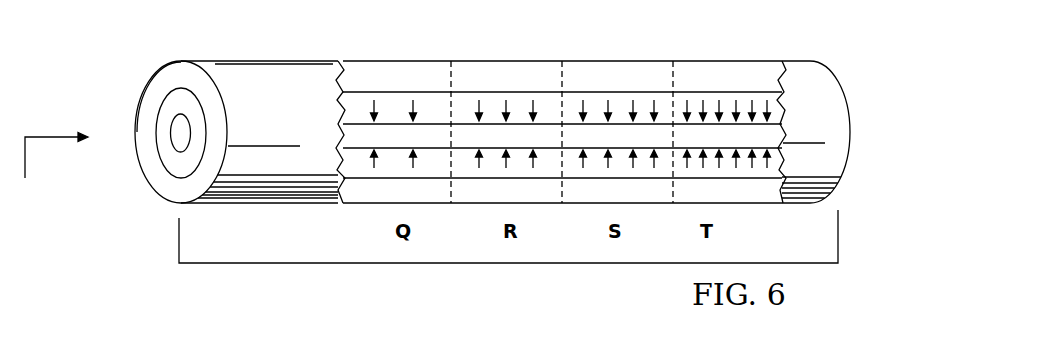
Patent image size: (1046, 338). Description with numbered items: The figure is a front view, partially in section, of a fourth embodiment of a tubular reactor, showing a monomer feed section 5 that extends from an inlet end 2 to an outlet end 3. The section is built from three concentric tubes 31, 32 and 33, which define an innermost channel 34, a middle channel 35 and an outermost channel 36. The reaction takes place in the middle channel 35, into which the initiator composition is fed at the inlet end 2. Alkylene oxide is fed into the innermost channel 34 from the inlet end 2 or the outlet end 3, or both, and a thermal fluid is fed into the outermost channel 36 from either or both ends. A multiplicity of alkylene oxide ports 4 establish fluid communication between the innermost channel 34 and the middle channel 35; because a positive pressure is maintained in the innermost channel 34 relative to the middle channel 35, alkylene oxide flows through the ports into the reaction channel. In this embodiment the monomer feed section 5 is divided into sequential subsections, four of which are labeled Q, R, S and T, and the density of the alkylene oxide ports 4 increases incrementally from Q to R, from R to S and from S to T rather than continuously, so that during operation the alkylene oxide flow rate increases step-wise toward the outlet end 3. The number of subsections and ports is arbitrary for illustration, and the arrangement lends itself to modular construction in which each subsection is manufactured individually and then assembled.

The inlet end 2 is at (55, 169).
The outlet end 3 is at (853, 163).
The alkylene oxide ports 4 is at (480, 112).
The monomer feed section 5 is at (503, 263).
The concentric tube 31 is at (173, 118).
The concentric tube 32 is at (187, 90).
The concentric tube 33 is at (160, 70).
The innermost channel 34 is at (180, 130).
The middle channel 35 is at (168, 153).
The outermost channel 36 is at (173, 183).